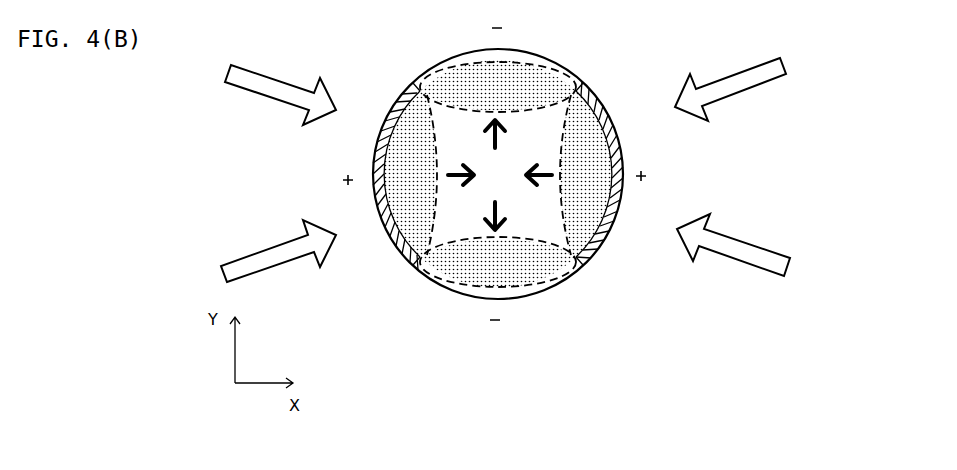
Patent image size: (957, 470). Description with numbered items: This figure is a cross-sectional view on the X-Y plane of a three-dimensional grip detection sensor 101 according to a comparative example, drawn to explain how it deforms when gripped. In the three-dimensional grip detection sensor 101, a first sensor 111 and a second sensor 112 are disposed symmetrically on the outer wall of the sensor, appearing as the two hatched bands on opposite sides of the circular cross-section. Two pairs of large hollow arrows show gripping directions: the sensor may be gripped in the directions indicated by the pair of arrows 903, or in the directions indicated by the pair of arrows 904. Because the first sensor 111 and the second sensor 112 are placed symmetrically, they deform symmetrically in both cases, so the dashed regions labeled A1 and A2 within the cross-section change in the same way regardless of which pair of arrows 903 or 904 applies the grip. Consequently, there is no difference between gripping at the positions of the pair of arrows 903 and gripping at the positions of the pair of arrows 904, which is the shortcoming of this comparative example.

The three-dimensional grip detection sensor 101 is at (692, 40).
The first sensor 111 is at (410, 256).
The second sensor 112 is at (603, 242).
The pair of arrows 903 is at (268, 72).
The pair of arrows 904 is at (748, 68).
The region A1 is at (403, 180).
The region A2 is at (460, 80).